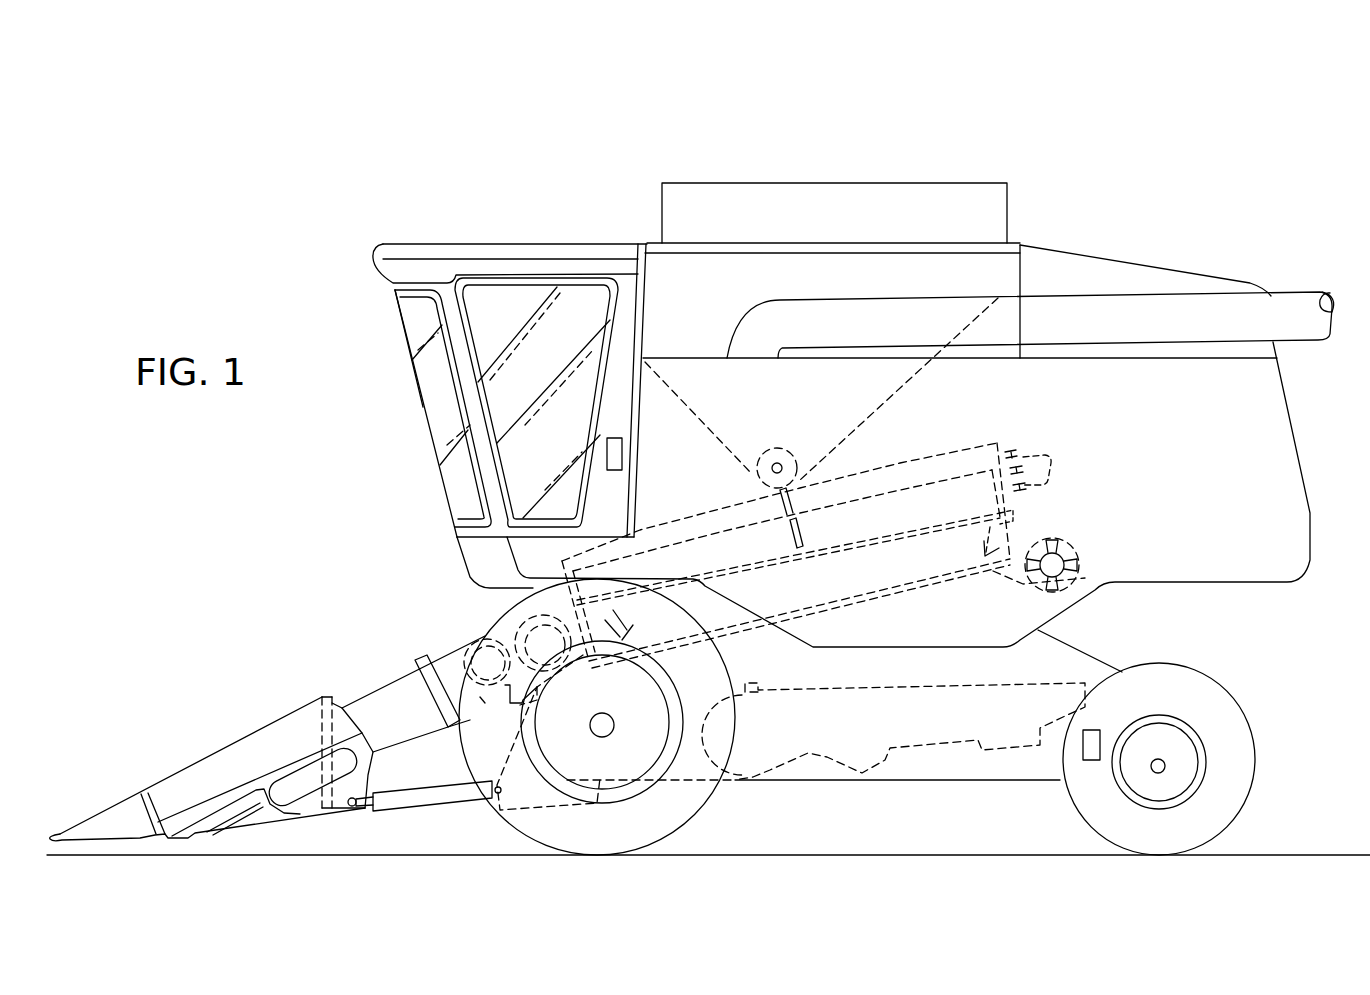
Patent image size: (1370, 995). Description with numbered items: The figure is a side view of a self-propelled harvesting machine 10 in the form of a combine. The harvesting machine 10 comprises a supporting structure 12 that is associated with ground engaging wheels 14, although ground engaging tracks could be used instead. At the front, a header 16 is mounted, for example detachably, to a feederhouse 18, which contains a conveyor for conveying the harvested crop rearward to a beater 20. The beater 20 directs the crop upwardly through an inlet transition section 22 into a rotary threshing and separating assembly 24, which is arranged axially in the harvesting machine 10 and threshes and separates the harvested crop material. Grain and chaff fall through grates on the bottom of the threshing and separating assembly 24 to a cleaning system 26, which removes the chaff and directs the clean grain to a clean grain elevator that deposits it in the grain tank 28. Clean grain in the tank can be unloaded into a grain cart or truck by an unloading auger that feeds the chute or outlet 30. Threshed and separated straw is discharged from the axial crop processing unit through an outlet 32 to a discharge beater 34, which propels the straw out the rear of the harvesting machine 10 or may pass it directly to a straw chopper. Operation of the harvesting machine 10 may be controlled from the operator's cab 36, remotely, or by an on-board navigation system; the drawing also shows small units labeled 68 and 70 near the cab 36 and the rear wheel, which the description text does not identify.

The self-propelled harvesting machine 10 is at (1136, 192).
The supporting structure 12 is at (898, 780).
The ground engaging wheels 14 is at (708, 806).
The header 16 is at (247, 743).
The feederhouse 18 is at (380, 690).
The beater 20 is at (500, 618).
The inlet transition section 22 is at (625, 655).
The rotary threshing and separating assembly 24 is at (706, 497).
The cleaning system 26 is at (825, 683).
The grain tank 28 is at (720, 297).
The chute or outlet 30 is at (1179, 330).
The outlet 32 is at (1058, 506).
The discharge beater 34 is at (1080, 548).
The operator's cab 36 is at (517, 468).
The controller / sensor in cab 68 is at (614, 438).
The sensor 70 is at (1092, 730).